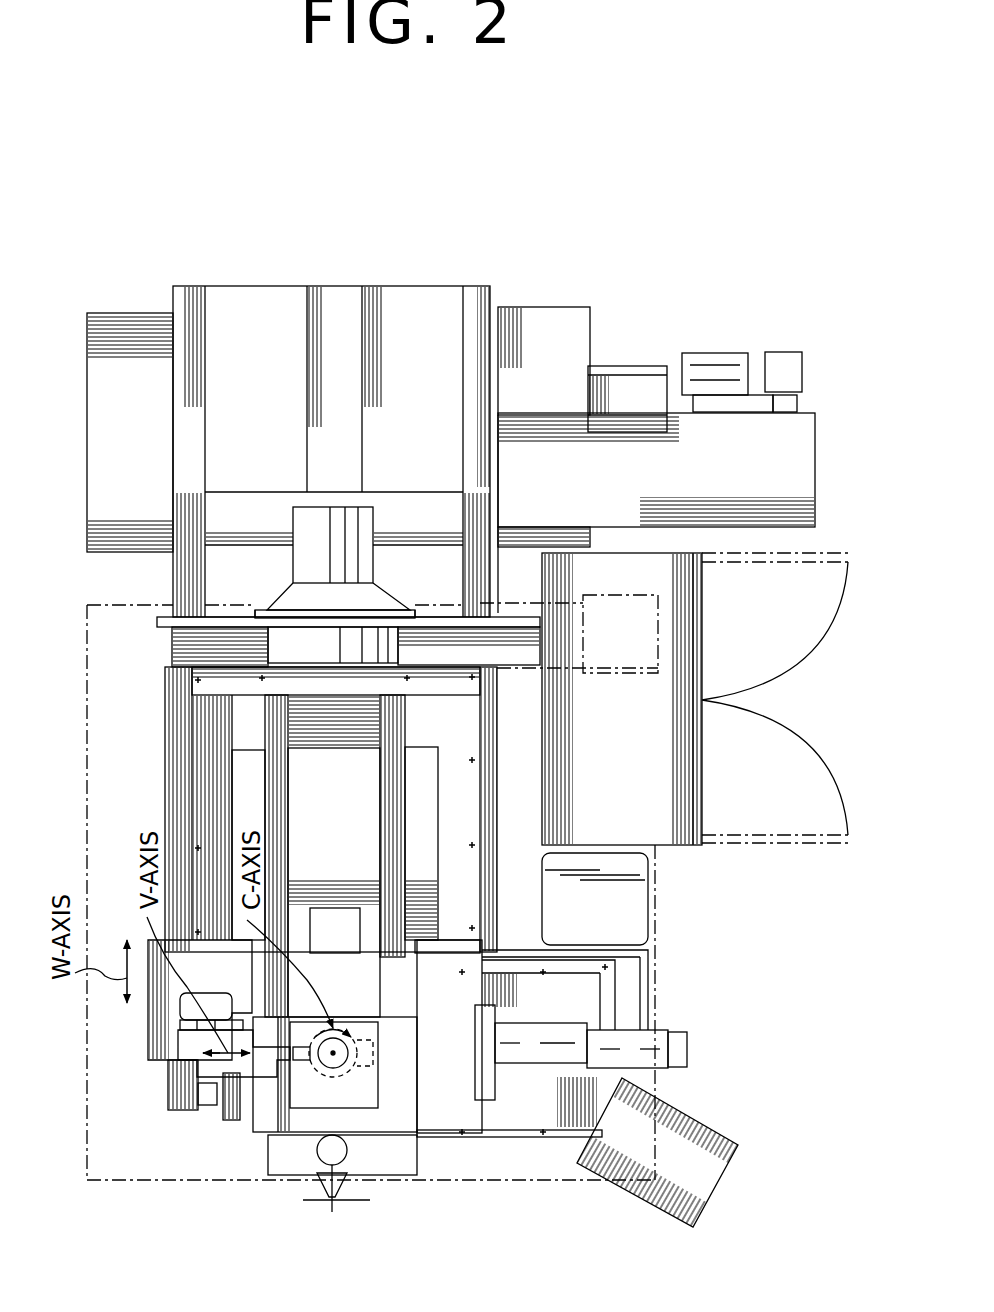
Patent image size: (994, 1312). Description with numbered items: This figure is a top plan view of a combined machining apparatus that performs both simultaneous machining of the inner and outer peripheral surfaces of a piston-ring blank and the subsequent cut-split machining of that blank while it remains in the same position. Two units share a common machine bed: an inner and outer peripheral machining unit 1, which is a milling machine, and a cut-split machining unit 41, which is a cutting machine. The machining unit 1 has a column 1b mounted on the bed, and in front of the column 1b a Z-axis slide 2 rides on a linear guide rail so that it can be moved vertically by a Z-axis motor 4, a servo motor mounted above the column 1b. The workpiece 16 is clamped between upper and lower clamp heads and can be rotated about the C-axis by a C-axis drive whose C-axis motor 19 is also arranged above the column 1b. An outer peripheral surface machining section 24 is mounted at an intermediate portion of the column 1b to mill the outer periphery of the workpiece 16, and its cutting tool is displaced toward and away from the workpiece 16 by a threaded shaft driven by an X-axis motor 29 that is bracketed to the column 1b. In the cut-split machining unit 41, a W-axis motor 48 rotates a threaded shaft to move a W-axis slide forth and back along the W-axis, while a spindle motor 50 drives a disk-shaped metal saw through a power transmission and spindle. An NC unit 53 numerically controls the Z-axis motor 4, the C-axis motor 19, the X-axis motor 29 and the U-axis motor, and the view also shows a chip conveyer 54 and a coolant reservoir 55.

The inner and outer peripheral machining unit 1 is at (490, 1103).
The column 1b is at (193, 802).
The Z-axis slide 2 is at (287, 1117).
The Z-axis motor 4 is at (328, 915).
The workpiece 16 is at (320, 1070).
The C-axis motor 19 is at (367, 1093).
The outer peripheral surface machining section 24 is at (563, 1030).
The X-axis motor 29 is at (653, 1032).
The cut-split machining unit 41 is at (148, 1073).
The W-axis motor 48 is at (178, 1083).
The spindle motor 50 is at (207, 1120).
The NC unit 53 is at (690, 1120).
The chip conveyer 54 is at (780, 437).
The coolant reservoir 55 is at (118, 330).